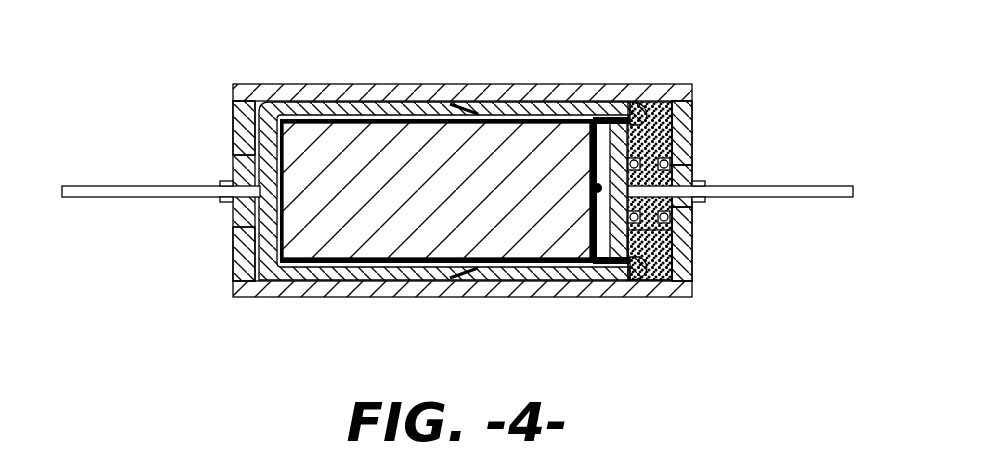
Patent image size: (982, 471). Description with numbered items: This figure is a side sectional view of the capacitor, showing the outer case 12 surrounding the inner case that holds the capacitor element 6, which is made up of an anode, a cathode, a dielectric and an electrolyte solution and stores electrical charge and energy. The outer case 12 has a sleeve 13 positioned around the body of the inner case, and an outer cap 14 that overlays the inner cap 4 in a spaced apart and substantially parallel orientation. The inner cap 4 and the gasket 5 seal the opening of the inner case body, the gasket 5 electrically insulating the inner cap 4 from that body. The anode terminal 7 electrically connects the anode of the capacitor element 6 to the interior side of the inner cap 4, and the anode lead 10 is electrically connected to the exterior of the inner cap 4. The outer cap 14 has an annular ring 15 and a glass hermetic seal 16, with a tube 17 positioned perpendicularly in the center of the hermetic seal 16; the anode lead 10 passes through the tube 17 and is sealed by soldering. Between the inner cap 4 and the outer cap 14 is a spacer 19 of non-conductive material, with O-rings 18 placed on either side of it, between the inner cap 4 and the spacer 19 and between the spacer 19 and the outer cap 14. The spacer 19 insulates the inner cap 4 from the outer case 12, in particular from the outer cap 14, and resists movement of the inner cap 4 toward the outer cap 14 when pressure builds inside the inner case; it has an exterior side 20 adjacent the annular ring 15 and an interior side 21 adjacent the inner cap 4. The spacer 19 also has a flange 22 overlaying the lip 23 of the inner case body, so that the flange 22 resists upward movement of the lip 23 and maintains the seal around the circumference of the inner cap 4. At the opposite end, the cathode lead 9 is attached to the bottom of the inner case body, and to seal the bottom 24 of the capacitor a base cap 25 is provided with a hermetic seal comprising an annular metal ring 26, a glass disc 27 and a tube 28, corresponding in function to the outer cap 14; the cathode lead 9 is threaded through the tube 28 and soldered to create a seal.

The inner cap 4 is at (612, 238).
The gasket 5 is at (622, 280).
The capacitor element 6 is at (375, 245).
The anode terminal 7 is at (597, 188).
The cathode lead 9 is at (123, 200).
The anode lead 10 is at (797, 198).
The outer case 12 is at (442, 80).
The sleeve 13 is at (345, 103).
The outer cap 14 is at (692, 115).
The annular ring 15 is at (688, 263).
The glass hermetic seal 16 is at (692, 168).
The tube 17 is at (694, 182).
The O-rings 18 is at (696, 209).
The spacer 19 is at (692, 140).
The exterior side 20 is at (692, 240).
The interior side 21 is at (602, 120).
The flange 22 is at (642, 108).
The lip 23 is at (663, 290).
The bottom 24 is at (212, 132).
The base cap 25 is at (233, 253).
The annular metal ring 26 is at (233, 113).
The glass disc 27 is at (238, 218).
The tube 28 is at (223, 182).